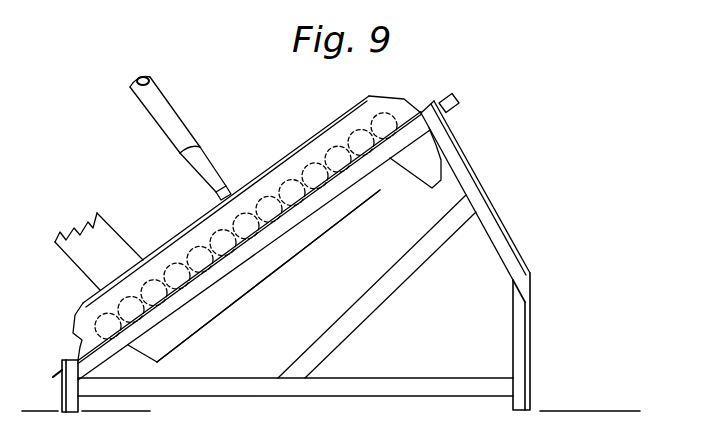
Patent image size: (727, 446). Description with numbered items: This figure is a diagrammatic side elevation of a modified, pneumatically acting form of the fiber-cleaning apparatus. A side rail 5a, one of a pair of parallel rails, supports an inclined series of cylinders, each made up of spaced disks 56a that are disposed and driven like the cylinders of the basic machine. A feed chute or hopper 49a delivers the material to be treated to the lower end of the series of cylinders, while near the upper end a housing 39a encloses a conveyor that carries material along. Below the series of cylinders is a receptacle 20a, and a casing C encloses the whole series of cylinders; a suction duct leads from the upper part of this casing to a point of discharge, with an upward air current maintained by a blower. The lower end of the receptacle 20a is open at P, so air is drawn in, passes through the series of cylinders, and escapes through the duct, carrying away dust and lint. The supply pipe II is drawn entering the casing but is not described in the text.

The casing C is at (342, 128).
The spaced disks 56a is at (290, 190).
The feed chute or hopper 49a is at (110, 237).
The supply pipe II is at (182, 128).
The side rail 5a is at (448, 99).
The housing 39a is at (424, 170).
The receptacle 20a is at (250, 297).
The open lower end of receptacle P is at (188, 349).